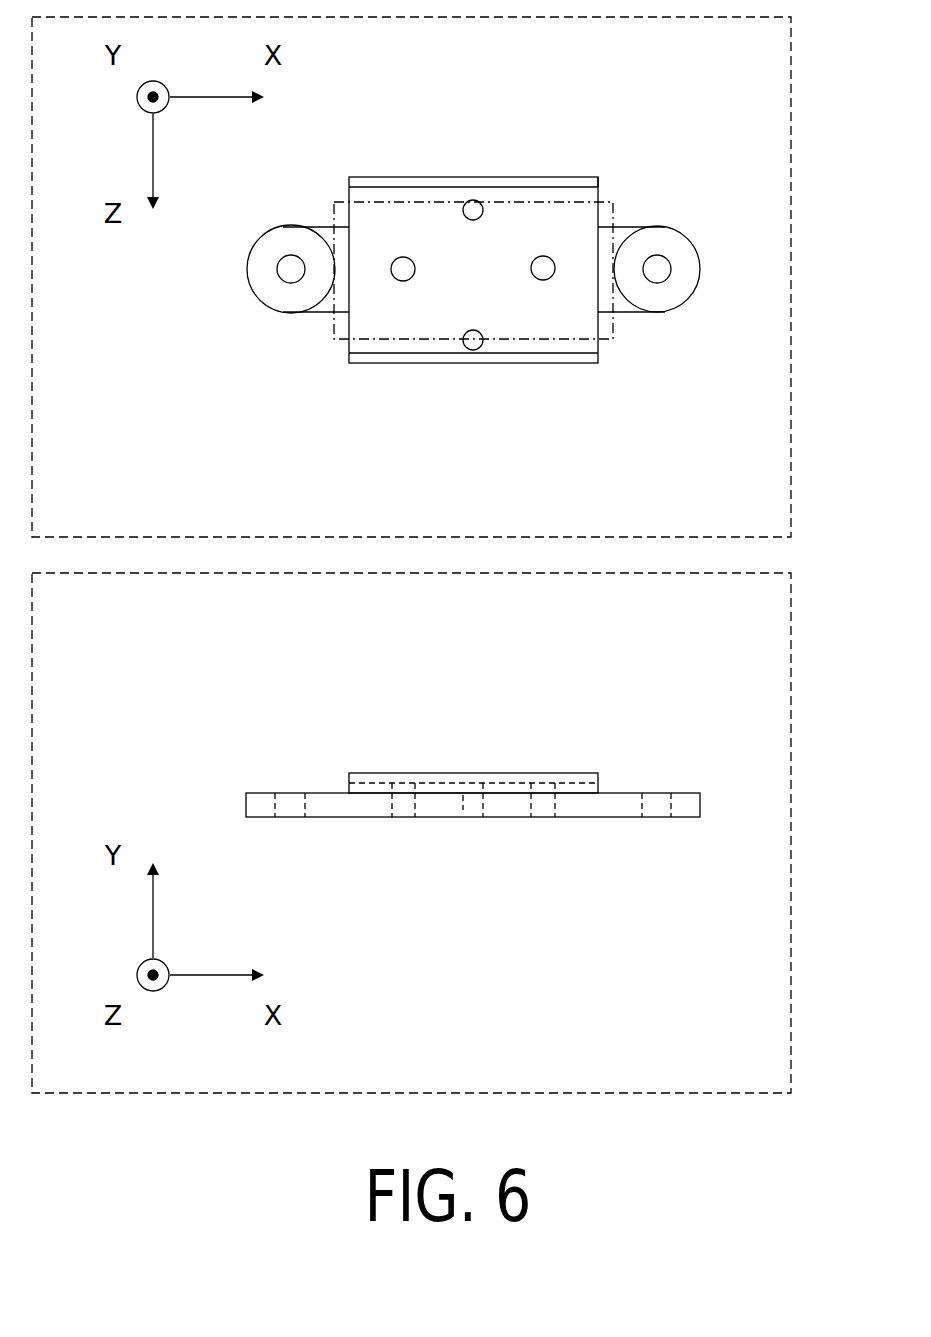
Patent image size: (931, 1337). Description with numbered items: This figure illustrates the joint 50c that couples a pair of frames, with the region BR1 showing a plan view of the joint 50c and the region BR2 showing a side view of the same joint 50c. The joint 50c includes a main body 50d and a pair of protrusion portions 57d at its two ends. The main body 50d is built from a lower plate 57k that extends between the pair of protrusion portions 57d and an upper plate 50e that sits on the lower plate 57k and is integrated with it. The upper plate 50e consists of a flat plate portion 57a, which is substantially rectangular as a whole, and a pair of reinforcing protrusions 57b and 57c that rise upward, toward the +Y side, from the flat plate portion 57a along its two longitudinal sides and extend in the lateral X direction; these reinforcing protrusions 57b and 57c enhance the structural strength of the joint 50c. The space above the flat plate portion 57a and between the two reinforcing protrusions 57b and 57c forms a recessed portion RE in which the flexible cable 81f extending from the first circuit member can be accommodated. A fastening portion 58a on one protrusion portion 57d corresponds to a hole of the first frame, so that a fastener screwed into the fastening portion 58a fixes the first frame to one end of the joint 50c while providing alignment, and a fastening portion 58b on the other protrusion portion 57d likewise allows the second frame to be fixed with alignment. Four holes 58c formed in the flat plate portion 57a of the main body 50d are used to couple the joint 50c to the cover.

The joint 50c is at (566, 158).
The main body 50d is at (410, 320).
The upper plate 50e is at (600, 180).
The flat plate portion 57a is at (502, 247).
The reinforcing protrusion 57b is at (432, 365).
The reinforcing protrusion 57c is at (410, 182).
The protrusion portion 57d is at (296, 305).
The lower plate 57k is at (445, 808).
The fastening portion 58a is at (291, 262).
The fastening portion 58b is at (667, 258).
The hole 58c is at (402, 265).
The flexible cable 81f is at (615, 200).
The recessed portion RE is at (573, 300).
The region BR1 is at (794, 100).
The region BR2 is at (794, 660).